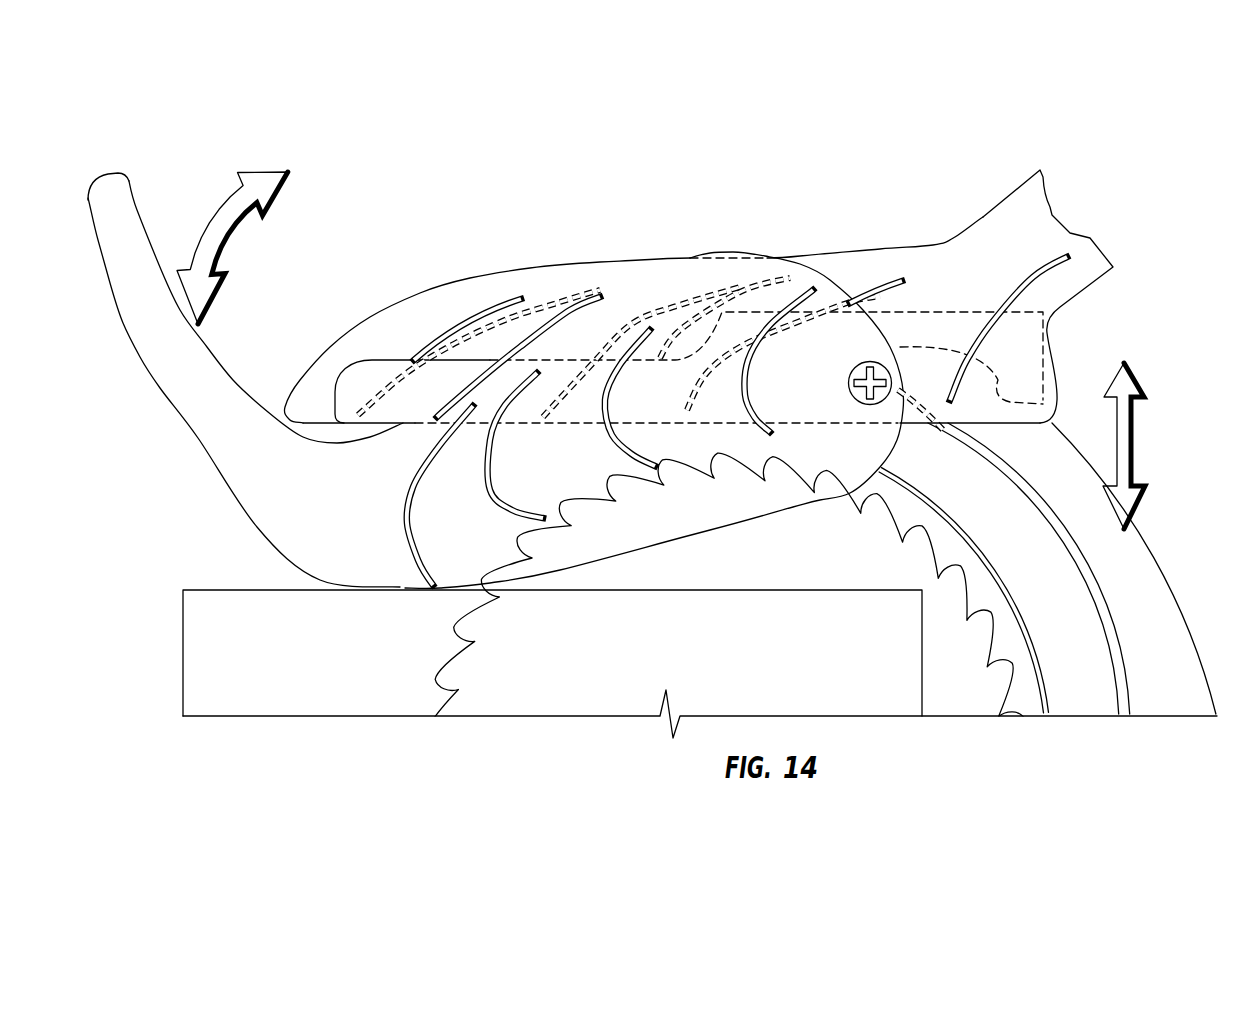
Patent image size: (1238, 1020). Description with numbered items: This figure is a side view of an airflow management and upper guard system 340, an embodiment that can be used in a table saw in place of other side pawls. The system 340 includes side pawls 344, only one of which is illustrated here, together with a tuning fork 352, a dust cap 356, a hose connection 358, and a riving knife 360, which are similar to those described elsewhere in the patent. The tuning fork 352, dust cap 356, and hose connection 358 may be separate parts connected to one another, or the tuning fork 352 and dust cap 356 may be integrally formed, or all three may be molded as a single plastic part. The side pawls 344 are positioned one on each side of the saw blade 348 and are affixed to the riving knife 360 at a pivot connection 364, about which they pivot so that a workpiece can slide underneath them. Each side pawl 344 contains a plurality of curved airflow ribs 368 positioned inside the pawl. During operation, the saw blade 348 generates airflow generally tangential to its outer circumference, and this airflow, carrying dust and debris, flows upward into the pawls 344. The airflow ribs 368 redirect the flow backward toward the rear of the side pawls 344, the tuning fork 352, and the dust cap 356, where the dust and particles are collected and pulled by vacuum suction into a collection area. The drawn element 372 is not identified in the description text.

The airflow management and upper guard system 340 is at (484, 177).
The side pawl 344 is at (223, 400).
The saw blade 348 is at (854, 566).
The tuning fork 352 is at (447, 377).
The dust cap 356 is at (870, 273).
The hose connection 358 is at (1048, 218).
The riving knife 360 is at (1073, 463).
The pivot connection 364 is at (880, 366).
The curved airflow ribs 368 is at (777, 383).
The workpiece 372 is at (309, 671).